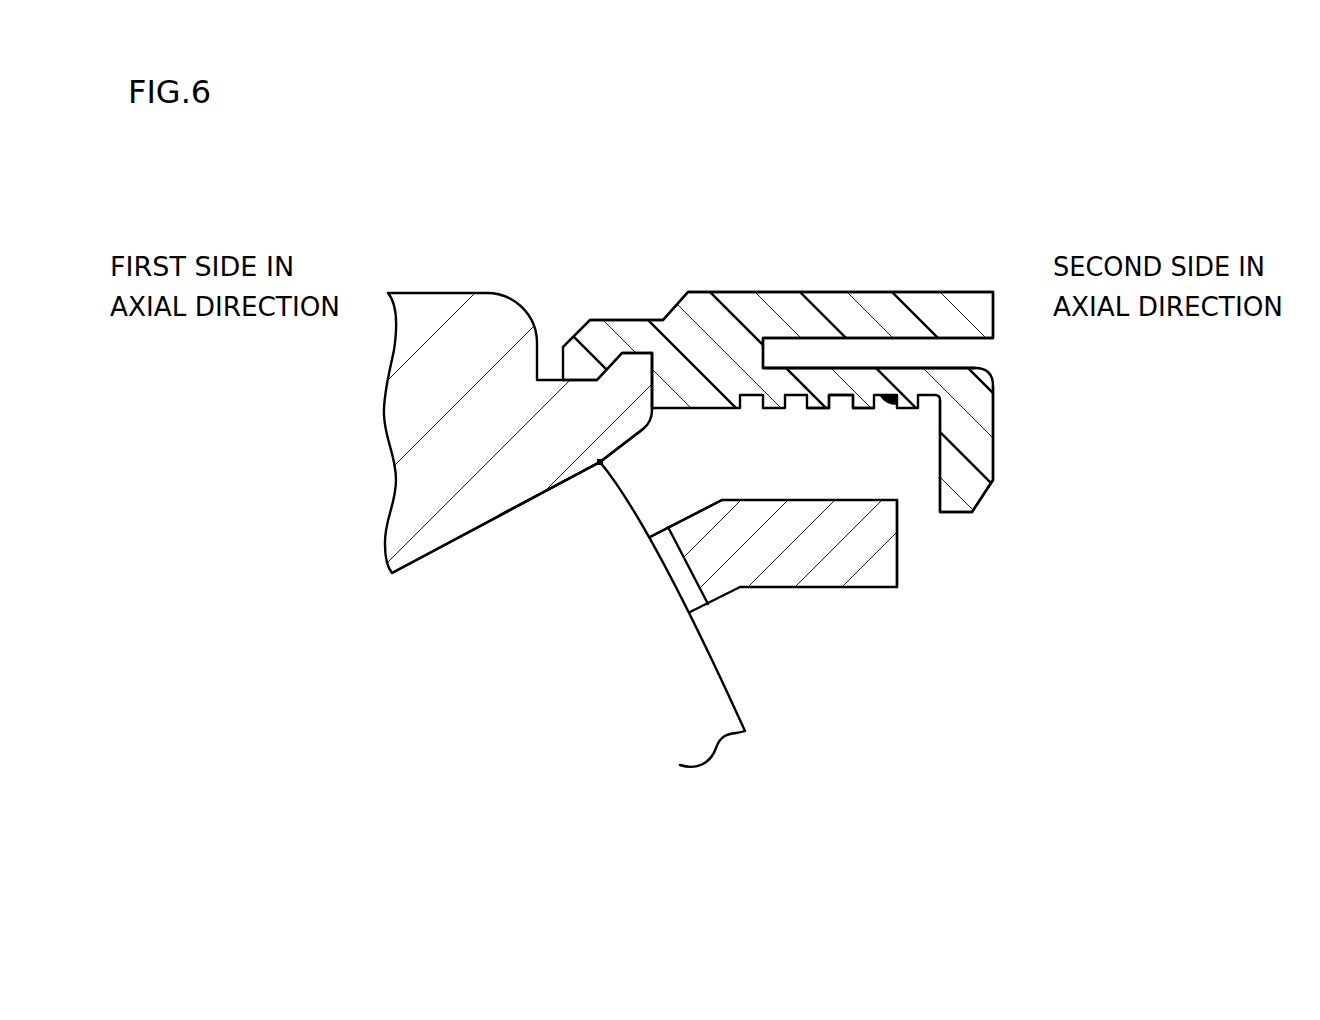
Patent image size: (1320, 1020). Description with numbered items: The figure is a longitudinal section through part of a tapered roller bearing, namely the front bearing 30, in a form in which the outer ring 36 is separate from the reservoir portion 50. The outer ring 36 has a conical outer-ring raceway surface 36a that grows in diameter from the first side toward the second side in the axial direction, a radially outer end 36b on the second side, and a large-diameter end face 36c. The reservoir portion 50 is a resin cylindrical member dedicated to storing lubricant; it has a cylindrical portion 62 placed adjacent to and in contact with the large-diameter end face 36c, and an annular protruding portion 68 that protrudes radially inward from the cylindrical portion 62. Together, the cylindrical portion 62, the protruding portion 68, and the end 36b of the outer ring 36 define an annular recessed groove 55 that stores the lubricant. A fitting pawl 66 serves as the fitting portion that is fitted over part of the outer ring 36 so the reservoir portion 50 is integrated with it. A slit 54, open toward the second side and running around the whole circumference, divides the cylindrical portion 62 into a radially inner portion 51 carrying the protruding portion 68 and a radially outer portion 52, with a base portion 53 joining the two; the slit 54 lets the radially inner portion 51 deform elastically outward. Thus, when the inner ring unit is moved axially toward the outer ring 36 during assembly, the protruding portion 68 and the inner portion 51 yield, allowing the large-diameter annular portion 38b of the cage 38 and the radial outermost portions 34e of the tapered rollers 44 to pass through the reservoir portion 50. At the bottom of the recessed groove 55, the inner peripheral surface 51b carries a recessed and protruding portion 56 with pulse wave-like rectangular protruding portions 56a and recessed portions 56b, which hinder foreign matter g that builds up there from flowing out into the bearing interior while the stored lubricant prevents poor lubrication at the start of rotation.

The front bearing 30 is at (464, 399).
The outer ring 36 is at (456, 335).
The outer-ring raceway surface 36a is at (453, 540).
The end of the outer ring 36b is at (555, 433).
The large-diameter end face 36c is at (652, 380).
The radial outermost portions of tapered rollers 34e is at (600, 465).
The cage 38 is at (793, 614).
The large-diameter annular portion 38b is at (855, 553).
The tapered rollers 44 is at (675, 675).
The reservoir portion 50 is at (842, 320).
The radially inner portion 51 is at (868, 393).
The inner peripheral surface 51b is at (815, 410).
The radially outer portion 52 is at (833, 310).
The base portion 53 is at (738, 340).
The slit 54 is at (1002, 350).
The recessed groove 55 is at (673, 482).
The recessed and protruding portion 56 is at (874, 449).
The protruding portions 56a is at (886, 434).
The recessed portions 56b is at (840, 398).
The cylindrical portion 62 is at (828, 257).
The fitting pawl 66 is at (587, 306).
The annular protruding portion 68 is at (1007, 444).
The foreign matter g is at (892, 400).